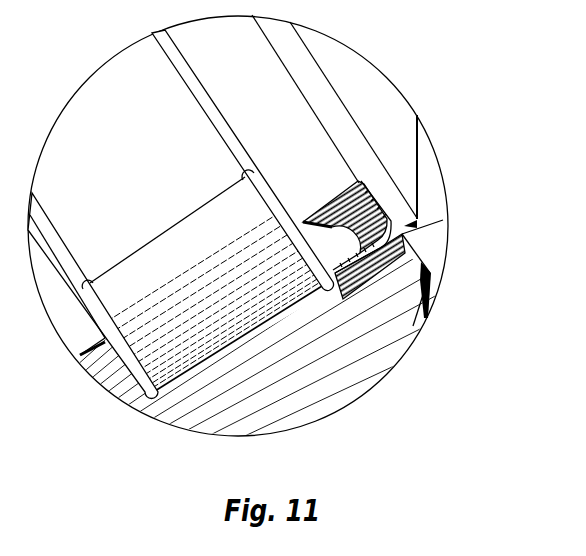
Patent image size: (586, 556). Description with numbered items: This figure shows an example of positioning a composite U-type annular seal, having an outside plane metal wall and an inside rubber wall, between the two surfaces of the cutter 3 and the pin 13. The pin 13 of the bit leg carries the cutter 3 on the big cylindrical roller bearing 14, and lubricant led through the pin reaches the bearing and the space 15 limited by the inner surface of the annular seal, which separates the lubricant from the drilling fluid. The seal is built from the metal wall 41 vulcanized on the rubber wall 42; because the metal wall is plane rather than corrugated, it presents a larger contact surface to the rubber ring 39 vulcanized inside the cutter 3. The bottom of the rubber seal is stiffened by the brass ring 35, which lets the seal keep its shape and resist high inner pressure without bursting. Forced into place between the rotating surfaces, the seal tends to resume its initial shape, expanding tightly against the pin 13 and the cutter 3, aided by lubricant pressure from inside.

The cutter 3 is at (382, 348).
The pin 13 is at (387, 107).
The big cylindrical roller bearing 14 is at (273, 283).
The space 15 is at (346, 243).
The brass ring 35 is at (380, 202).
The rubber ring 39 is at (422, 271).
The metal wall 41 is at (362, 275).
The rubber wall 42 is at (340, 201).